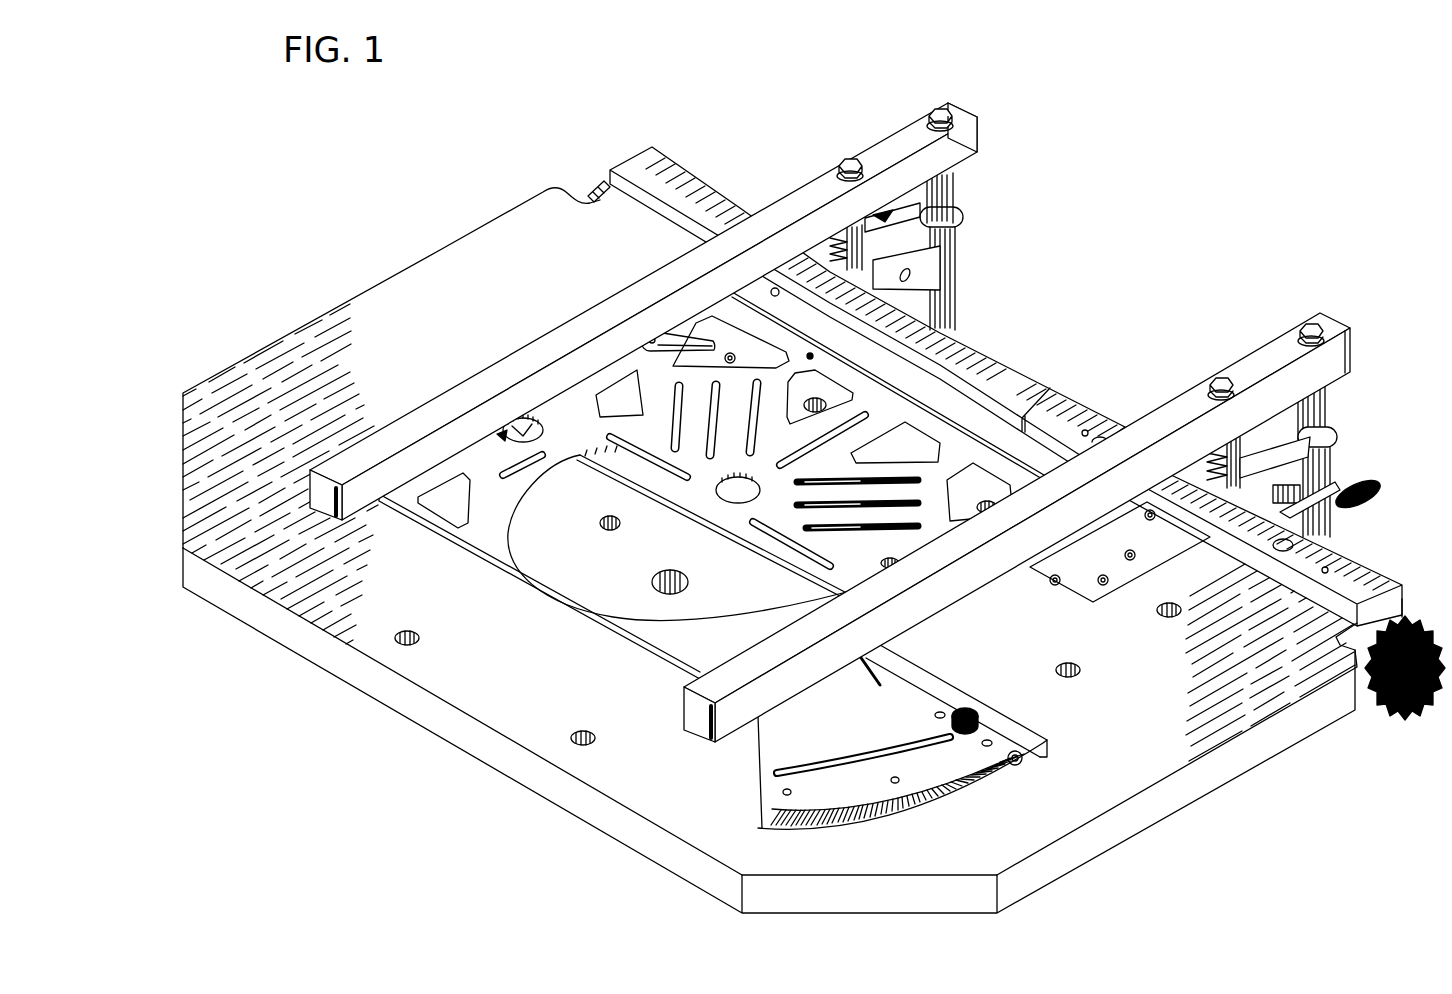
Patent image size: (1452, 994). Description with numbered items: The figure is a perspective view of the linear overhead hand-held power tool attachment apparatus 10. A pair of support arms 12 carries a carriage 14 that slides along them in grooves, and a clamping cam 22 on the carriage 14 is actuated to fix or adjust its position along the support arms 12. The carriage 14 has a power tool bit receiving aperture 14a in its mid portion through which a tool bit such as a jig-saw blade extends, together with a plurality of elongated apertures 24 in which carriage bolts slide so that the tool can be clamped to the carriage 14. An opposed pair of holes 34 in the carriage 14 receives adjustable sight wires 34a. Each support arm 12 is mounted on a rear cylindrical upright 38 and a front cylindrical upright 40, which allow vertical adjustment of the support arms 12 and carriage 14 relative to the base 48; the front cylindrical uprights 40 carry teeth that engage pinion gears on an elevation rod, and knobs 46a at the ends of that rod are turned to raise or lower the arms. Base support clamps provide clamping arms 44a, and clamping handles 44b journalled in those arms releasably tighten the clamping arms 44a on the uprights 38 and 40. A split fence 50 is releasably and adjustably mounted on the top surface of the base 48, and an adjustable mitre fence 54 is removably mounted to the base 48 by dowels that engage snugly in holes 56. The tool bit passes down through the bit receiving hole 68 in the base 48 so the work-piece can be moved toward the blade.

The apparatus 10 is at (1152, 213).
The support arms 12 is at (885, 150).
The carriage 14 is at (490, 538).
The power tool bit receiving aperture 14a is at (717, 497).
The clamping cam 22 is at (667, 333).
The elongated apertures 24 is at (847, 533).
The holes 34 is at (536, 441).
The adjustable sight wires 34a is at (527, 412).
The rear cylindrical uprights 38 is at (953, 200).
The front cylindrical uprights 40 is at (873, 260).
The clamping arms 44a is at (1290, 463).
The clamping handles 44b is at (1362, 482).
The knobs 46a is at (1416, 717).
The base 48 is at (414, 364).
The split fence 50 is at (685, 195).
The adjustable mitre fence 54 is at (943, 767).
The holes 56 is at (1085, 669).
The bit receiving hole 68 is at (653, 578).